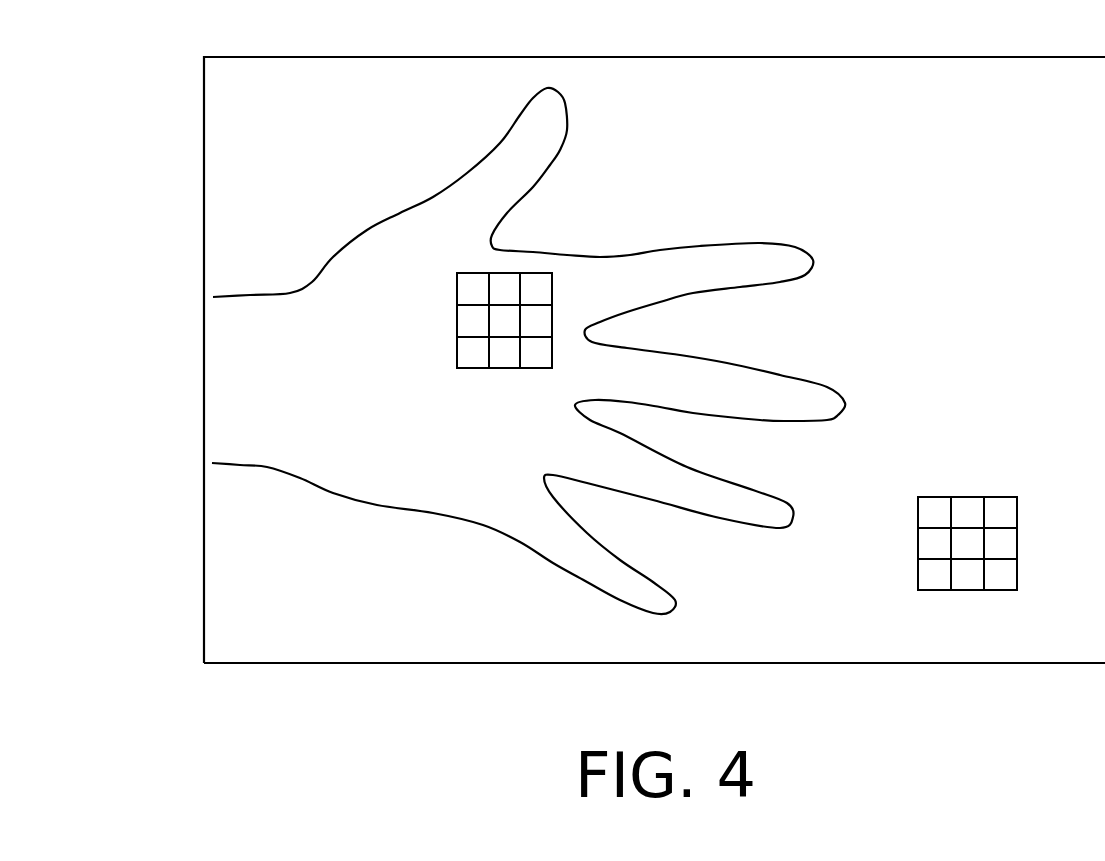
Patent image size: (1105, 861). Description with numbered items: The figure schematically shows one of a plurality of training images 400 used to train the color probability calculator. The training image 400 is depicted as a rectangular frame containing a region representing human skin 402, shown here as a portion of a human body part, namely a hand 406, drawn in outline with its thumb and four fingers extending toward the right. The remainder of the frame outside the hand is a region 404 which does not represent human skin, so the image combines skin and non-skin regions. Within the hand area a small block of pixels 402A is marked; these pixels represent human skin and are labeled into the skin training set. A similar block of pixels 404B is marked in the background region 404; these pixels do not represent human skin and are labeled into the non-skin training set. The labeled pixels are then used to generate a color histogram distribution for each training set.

The training images 400 is at (449, 56).
The human skin 402 is at (440, 431).
The pixels representing human skin 402A is at (470, 283).
The regions which do not represent human skin 404 is at (1025, 397).
The pixels which do not represent human skin 404B is at (932, 580).
The hand 406 is at (377, 506).